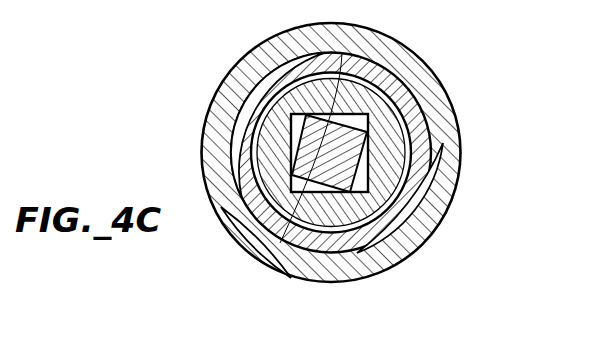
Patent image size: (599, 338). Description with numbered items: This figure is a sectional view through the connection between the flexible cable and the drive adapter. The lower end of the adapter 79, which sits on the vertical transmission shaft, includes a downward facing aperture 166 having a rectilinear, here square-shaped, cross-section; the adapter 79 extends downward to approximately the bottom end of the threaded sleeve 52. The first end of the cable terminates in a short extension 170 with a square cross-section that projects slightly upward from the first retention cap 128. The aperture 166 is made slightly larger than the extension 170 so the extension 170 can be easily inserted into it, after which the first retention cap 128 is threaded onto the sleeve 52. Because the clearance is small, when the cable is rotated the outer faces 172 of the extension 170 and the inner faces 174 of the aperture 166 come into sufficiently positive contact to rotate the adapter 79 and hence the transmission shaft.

The threaded sleeve 52 is at (393, 87).
The adapter 79 is at (387, 182).
The first retention cap 128 is at (367, 270).
The aperture 166 is at (297, 120).
The extension 170 is at (333, 52).
The outer faces 172 is at (282, 258).
The inner faces 174 is at (297, 134).